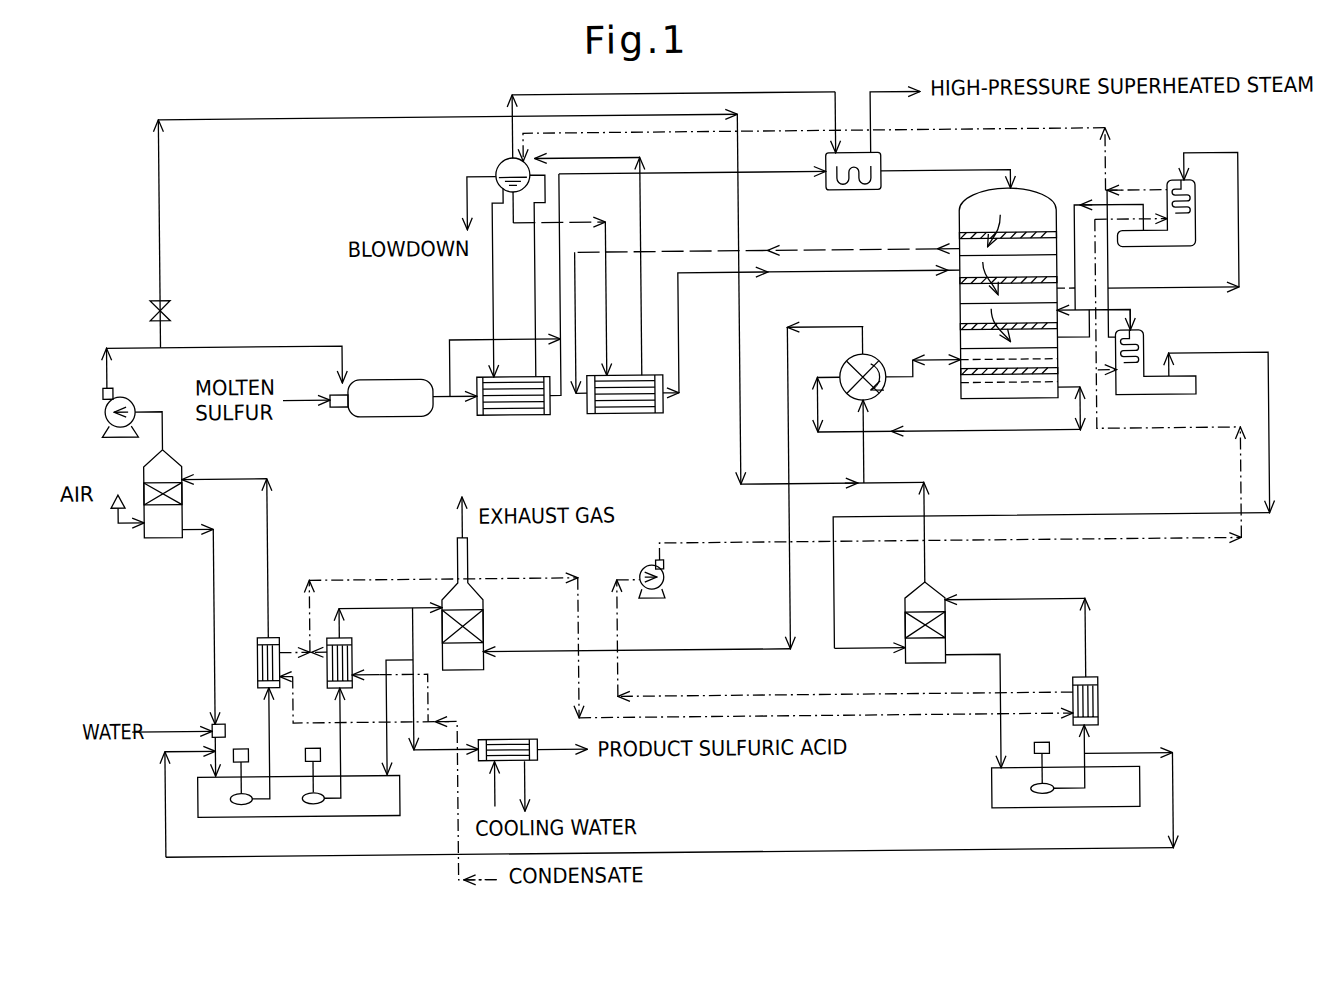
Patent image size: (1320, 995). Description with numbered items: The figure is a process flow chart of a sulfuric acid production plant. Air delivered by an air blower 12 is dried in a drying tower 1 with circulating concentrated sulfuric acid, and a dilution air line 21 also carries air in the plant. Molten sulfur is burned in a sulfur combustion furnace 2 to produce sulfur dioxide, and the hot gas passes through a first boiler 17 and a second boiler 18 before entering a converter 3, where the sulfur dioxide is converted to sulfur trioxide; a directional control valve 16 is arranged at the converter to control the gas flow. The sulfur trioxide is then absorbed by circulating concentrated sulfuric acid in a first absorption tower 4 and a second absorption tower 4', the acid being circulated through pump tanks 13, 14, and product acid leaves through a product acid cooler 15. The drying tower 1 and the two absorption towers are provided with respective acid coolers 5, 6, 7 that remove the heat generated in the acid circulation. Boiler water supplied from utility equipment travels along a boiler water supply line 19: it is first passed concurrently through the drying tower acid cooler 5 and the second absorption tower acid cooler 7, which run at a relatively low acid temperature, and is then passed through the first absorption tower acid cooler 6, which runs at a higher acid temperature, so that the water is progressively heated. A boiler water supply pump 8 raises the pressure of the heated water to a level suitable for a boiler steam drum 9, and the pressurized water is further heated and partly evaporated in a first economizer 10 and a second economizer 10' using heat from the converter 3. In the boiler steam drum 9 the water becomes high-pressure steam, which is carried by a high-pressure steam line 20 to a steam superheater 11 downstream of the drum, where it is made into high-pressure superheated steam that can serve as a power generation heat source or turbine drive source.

The drying tower 1 is at (176, 462).
The sulfur combustion furnace 2 is at (397, 377).
The converter 3 is at (1022, 195).
The first absorption tower 4 is at (941, 605).
The second absorption tower 4' is at (447, 597).
The drying tower acid cooler 5 is at (256, 677).
The first absorption tower acid cooler 6 is at (1095, 681).
The second absorption tower acid cooler 7 is at (337, 634).
The boiler water supply pump 8 is at (644, 566).
The boiler steam drum 9 is at (470, 176).
The first economizer 10 is at (1178, 376).
The second economizer 10' is at (1161, 234).
The steam superheater 11 is at (884, 158).
The air blower 12 is at (128, 393).
The pump tank 13 is at (397, 813).
The pump tank 14 is at (989, 800).
The product acid cooler 15 is at (530, 759).
The directional control valve 16 is at (879, 360).
The first boiler 17 is at (482, 414).
The second boiler 18 is at (660, 413).
The boiler water supply line 19 is at (1108, 545).
The high-pressure steam line 20 is at (758, 94).
The dilution air line 21 is at (273, 115).